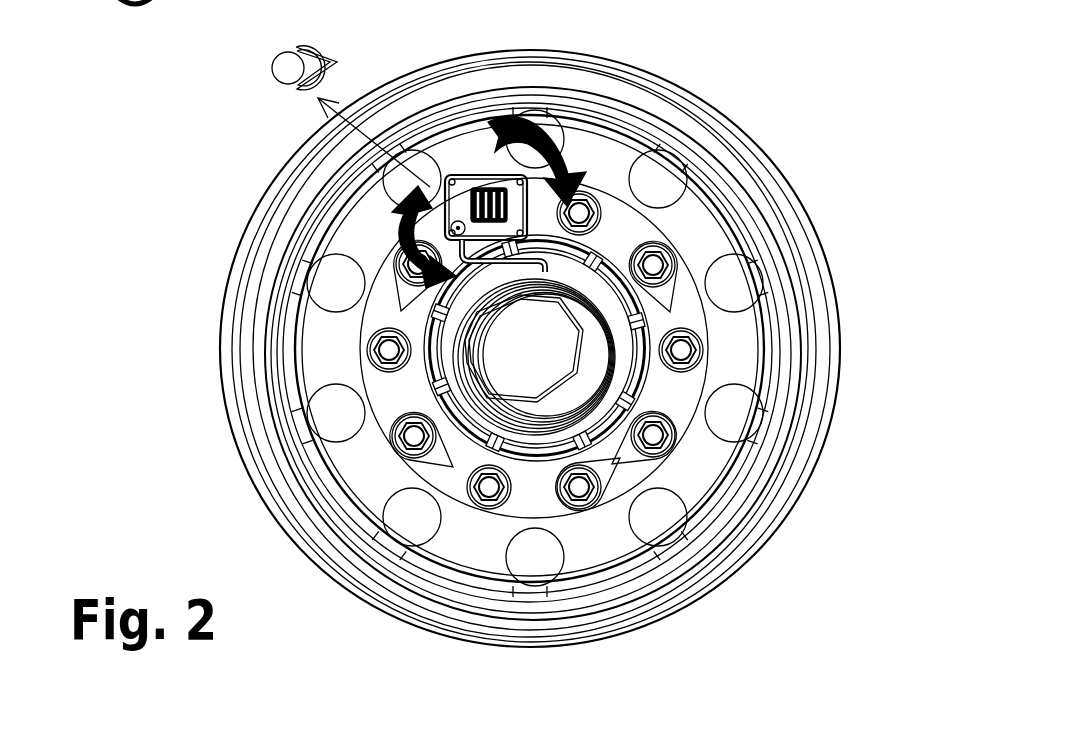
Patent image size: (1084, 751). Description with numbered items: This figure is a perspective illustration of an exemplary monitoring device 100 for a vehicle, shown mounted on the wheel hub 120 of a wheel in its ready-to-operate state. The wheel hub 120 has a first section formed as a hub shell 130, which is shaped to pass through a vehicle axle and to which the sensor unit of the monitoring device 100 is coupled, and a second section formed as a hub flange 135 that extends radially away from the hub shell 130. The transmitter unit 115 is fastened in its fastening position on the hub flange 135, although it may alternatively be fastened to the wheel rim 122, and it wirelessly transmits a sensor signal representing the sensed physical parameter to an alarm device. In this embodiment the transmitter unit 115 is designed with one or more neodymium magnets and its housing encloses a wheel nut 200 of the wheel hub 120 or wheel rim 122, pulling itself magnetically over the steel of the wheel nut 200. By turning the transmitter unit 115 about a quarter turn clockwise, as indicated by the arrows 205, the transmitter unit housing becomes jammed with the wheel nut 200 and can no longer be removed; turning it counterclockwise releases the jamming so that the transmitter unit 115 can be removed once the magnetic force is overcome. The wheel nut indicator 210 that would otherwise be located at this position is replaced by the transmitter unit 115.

The monitoring device 100 is at (436, 139).
The transmitter unit 115 is at (485, 173).
The wheel hub 120 is at (664, 229).
The wheel rim 122 is at (828, 358).
The hub shell 130 is at (470, 297).
The hub flange 135 is at (612, 228).
The wheel nut 200 is at (693, 340).
The arrows 205 is at (518, 110).
The wheel nut indicator 210 is at (600, 472).